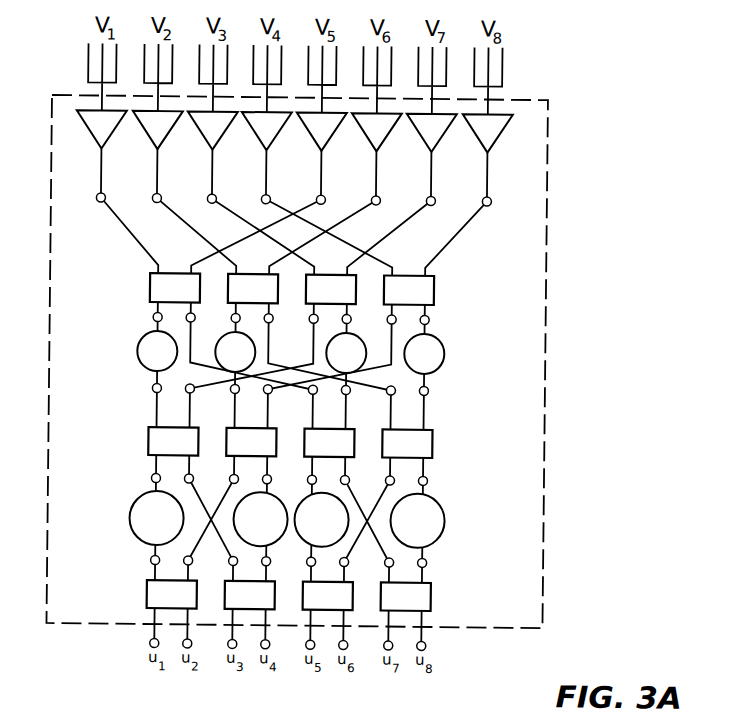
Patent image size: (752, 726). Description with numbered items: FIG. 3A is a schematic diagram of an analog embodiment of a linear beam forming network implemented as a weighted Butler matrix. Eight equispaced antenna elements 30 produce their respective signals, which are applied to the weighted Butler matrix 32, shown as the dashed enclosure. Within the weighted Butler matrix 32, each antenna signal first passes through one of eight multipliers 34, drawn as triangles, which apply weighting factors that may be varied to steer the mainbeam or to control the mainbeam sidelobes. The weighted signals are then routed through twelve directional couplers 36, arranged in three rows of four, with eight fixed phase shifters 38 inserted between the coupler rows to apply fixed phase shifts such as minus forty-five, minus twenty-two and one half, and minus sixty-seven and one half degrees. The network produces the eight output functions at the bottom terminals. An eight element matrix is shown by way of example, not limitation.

The antenna elements 30 is at (502, 68).
The weighted Butler matrix 32 is at (548, 243).
The multipliers 34 is at (505, 128).
The directional couplers 36 is at (437, 272).
The fixed phase shifters 38 is at (436, 368).